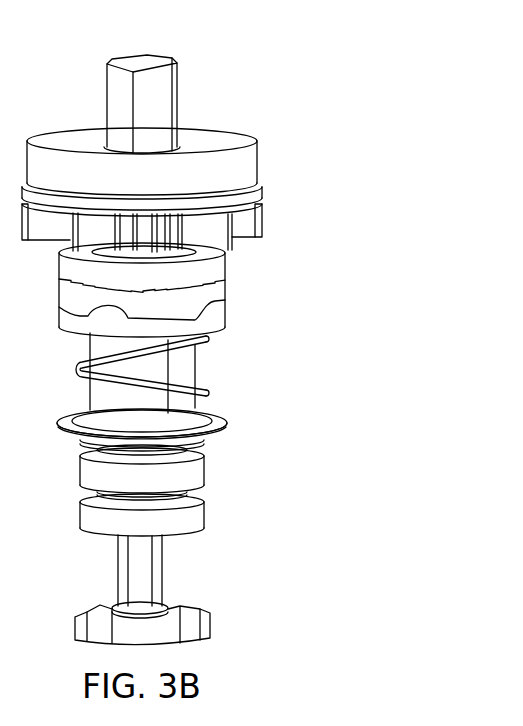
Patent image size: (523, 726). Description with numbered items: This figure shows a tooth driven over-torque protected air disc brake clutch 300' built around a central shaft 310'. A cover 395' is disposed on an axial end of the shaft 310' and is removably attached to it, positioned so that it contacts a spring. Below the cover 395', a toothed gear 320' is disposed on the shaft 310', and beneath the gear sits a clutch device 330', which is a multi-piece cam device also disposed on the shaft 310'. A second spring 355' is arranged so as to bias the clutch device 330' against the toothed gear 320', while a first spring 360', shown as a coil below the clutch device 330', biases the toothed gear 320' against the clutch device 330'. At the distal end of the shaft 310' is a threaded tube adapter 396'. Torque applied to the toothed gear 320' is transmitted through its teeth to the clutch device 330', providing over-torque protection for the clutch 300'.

The tooth driven over-torque protected air disc brake clutch 300' is at (217, 331).
The cover 395' is at (193, 161).
The second spring 355' is at (217, 187).
The toothed gear 320' is at (193, 228).
The clutch device 330' is at (205, 290).
The first spring 360' is at (193, 369).
The shaft 310' is at (207, 576).
The threaded tube adapter 396' is at (197, 625).